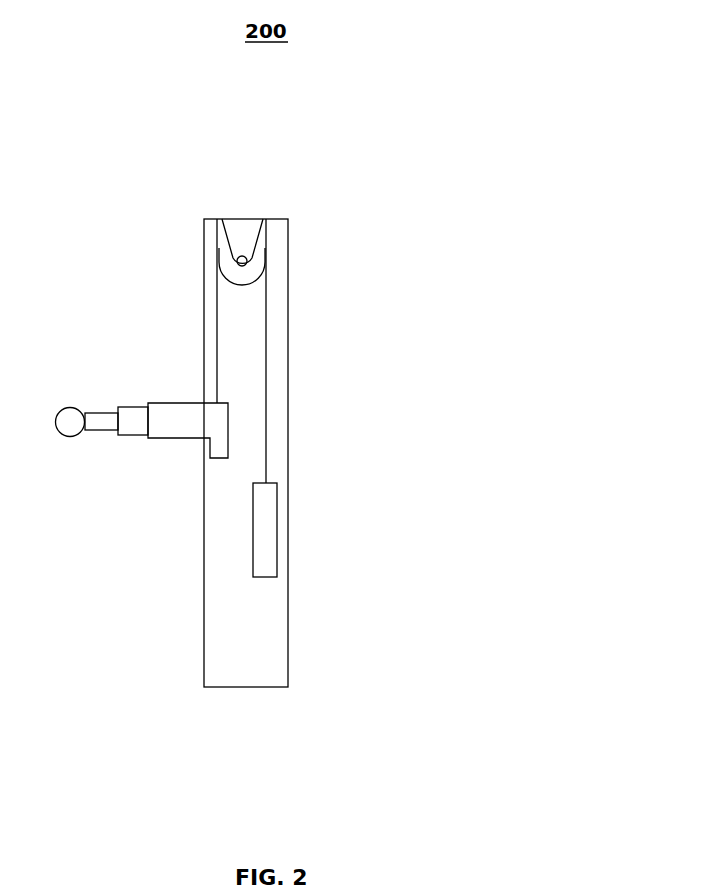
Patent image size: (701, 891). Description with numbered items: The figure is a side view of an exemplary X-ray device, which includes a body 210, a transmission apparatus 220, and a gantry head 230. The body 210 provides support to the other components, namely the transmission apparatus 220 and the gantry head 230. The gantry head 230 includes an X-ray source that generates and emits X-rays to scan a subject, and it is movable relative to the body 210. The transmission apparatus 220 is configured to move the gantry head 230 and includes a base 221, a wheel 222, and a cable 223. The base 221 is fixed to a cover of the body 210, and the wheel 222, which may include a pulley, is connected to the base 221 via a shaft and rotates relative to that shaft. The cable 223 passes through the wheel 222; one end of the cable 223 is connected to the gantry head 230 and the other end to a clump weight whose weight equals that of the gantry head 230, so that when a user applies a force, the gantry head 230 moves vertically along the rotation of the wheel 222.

The body 210 is at (288, 610).
The transmission apparatus 220 is at (316, 272).
The base 221 is at (247, 232).
The wheel 222 is at (228, 267).
The cable 223 is at (218, 342).
The gantry head 230 is at (168, 423).